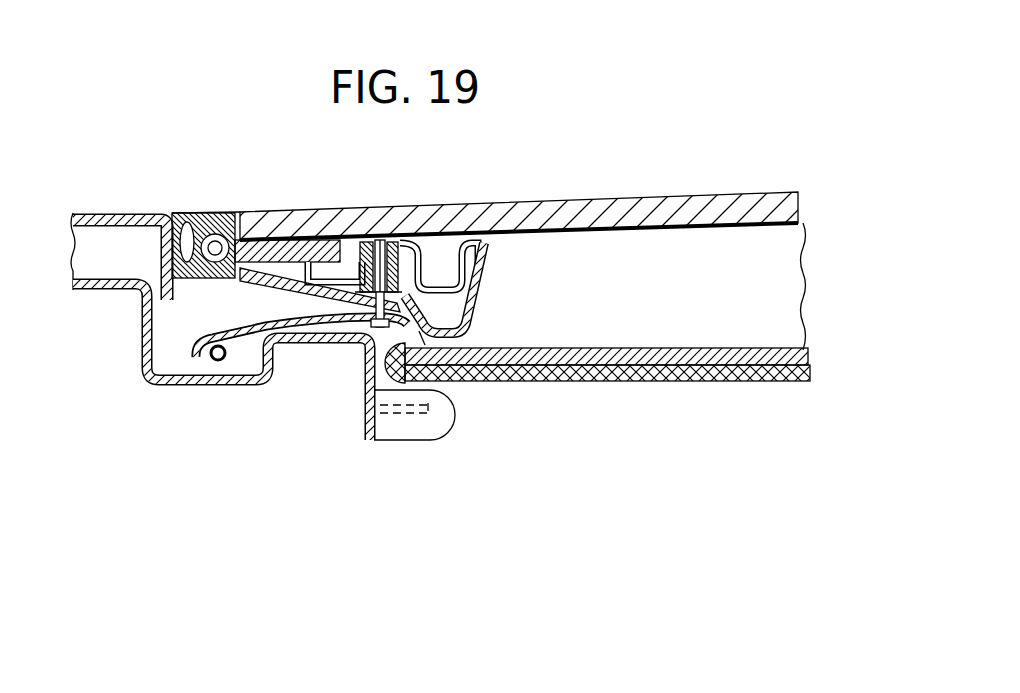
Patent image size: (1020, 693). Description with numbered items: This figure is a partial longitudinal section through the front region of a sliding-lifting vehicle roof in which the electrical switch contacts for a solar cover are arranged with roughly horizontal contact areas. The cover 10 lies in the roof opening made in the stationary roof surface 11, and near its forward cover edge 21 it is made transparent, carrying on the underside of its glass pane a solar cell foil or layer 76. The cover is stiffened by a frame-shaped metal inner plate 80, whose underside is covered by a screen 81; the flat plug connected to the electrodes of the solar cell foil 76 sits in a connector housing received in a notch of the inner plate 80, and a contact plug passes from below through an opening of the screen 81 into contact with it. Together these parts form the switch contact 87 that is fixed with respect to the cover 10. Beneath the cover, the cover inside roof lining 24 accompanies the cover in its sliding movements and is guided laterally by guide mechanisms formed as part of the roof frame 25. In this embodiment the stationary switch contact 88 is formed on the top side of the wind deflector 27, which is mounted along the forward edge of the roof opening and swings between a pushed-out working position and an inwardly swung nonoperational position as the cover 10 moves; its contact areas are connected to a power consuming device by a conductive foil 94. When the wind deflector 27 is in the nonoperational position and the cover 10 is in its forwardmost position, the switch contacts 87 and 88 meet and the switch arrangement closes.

The cover 10 is at (648, 192).
The stationary roof surface 11 is at (112, 213).
The forward cover edge 21 is at (268, 212).
The cover inside roof lining 24 is at (697, 355).
The roof frame 25 is at (226, 387).
The wind deflector 27 is at (242, 318).
The solar cell foil or layer 76 is at (534, 236).
The metal inner plate 80 is at (401, 242).
The screen 81 is at (480, 240).
The switch contact 87 is at (346, 235).
The switch contact 88 is at (345, 362).
The conductive foil 94 is at (291, 347).